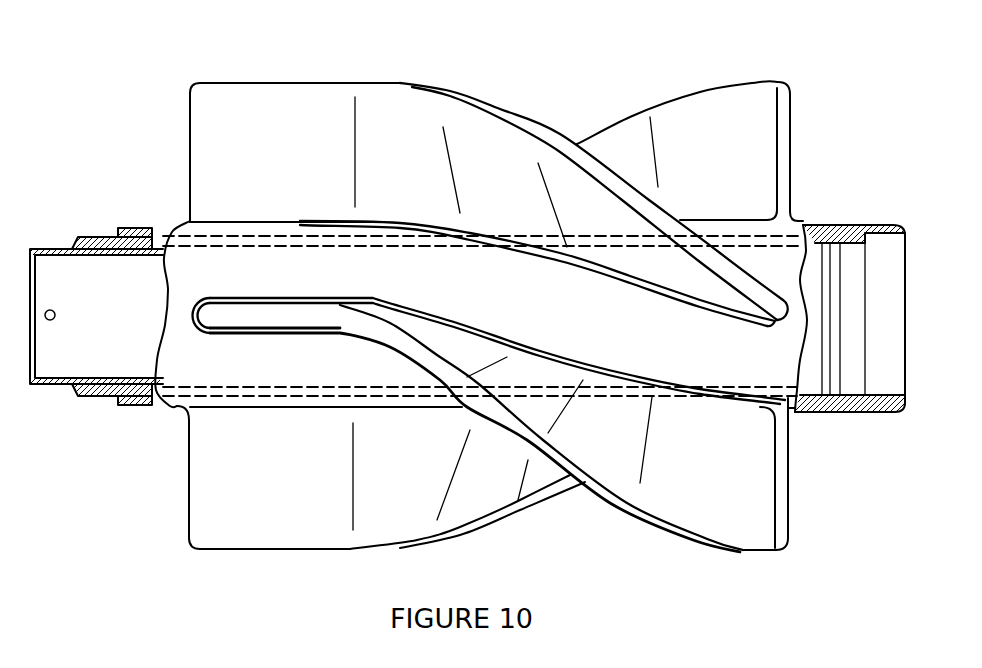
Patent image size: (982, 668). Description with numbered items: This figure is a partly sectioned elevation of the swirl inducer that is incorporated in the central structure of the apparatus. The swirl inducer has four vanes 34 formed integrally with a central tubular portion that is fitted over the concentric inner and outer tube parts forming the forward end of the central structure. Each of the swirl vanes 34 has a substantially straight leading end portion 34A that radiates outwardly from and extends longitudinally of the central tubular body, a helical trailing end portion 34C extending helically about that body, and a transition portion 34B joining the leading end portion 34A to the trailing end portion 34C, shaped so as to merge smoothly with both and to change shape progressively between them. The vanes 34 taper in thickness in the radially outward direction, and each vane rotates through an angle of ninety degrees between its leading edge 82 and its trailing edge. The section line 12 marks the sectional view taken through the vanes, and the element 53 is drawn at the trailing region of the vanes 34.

The section line 12- 12 is at (222, 53).
The swirl vanes 34 is at (728, 503).
The leading end portions 34A is at (280, 122).
The transition portions 34B is at (390, 160).
The helical trailing end portions 34C is at (558, 220).
The trailing fin 53 is at (788, 473).
The leading edge 82 is at (191, 158).